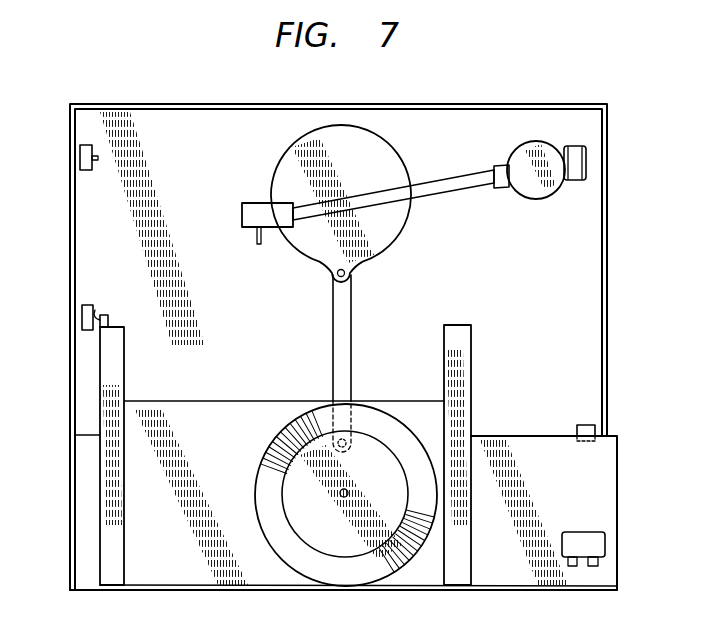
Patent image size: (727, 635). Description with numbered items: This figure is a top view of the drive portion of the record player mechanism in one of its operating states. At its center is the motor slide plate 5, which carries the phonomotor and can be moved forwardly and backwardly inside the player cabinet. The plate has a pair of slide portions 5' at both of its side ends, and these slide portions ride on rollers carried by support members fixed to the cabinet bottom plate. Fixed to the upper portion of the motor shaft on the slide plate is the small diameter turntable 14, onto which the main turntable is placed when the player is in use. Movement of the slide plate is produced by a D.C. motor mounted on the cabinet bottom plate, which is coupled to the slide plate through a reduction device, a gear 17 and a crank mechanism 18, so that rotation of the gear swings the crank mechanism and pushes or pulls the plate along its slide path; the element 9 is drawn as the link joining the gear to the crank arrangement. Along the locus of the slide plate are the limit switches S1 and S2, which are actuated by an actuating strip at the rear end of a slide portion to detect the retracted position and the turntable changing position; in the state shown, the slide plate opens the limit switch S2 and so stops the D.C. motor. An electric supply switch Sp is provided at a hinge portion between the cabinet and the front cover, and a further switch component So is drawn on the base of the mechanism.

The motor slide plate 5 is at (346, 510).
The slide portions 5' is at (308, 455).
The pressure arm 9 is at (451, 197).
The small diameter turntable 14 is at (342, 572).
The gear 17 is at (386, 157).
The crank mechanism 18 is at (352, 330).
The limit switch S1 is at (80, 157).
The limit switch S2 is at (82, 318).
The electric supply switch Sp is at (597, 428).
The sensor So is at (593, 567).